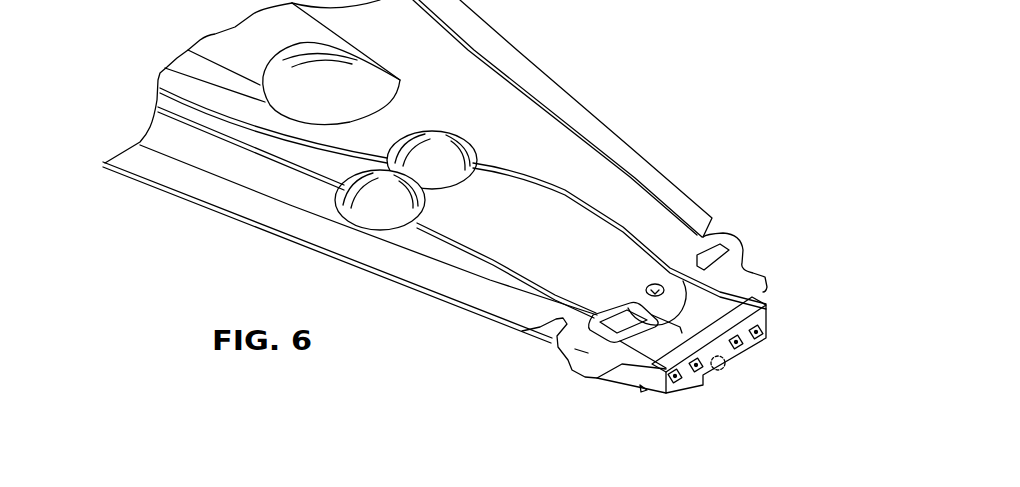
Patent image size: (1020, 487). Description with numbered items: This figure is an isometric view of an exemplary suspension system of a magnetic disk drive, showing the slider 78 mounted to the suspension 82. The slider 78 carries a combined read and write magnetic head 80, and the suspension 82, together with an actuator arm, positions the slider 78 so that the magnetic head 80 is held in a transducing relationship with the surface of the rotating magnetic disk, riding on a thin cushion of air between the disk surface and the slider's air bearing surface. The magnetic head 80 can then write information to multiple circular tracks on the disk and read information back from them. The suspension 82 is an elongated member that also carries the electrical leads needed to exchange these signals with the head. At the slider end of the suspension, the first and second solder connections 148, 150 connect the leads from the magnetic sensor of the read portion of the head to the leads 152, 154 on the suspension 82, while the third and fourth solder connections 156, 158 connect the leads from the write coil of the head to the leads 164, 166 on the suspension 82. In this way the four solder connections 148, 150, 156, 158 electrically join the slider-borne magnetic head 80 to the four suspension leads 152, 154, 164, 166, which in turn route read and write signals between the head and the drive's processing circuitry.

The slider 78 is at (614, 384).
The magnetic head 80 is at (722, 366).
The suspension 82 is at (573, 96).
The first solder connection 148 is at (667, 380).
The second solder connection 150 is at (767, 322).
The lead 152 is at (444, 238).
The lead 154 is at (627, 228).
The third solder connection 156 is at (690, 378).
The fourth solder connection 158 is at (743, 350).
The lead 164 is at (496, 258).
The lead 166 is at (550, 194).